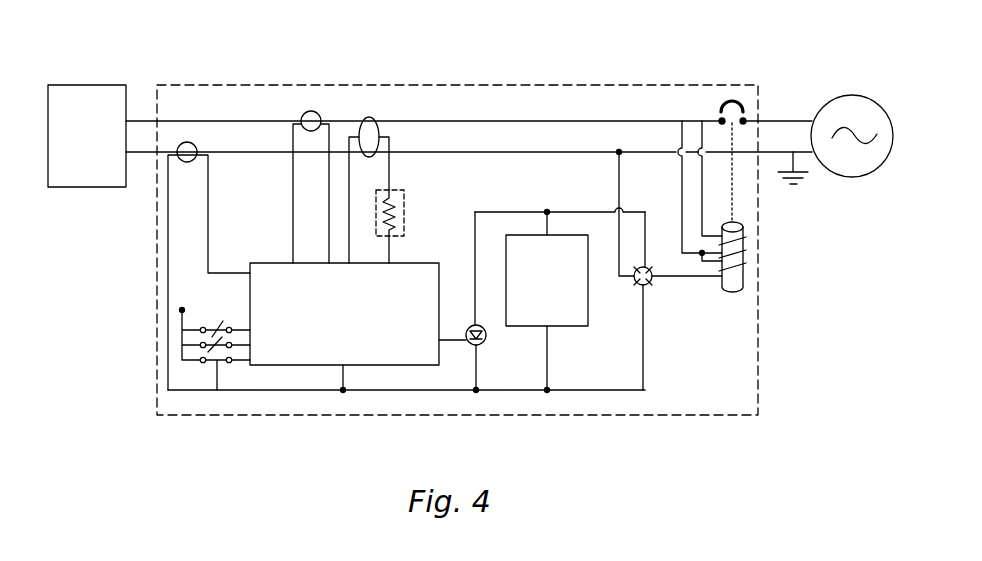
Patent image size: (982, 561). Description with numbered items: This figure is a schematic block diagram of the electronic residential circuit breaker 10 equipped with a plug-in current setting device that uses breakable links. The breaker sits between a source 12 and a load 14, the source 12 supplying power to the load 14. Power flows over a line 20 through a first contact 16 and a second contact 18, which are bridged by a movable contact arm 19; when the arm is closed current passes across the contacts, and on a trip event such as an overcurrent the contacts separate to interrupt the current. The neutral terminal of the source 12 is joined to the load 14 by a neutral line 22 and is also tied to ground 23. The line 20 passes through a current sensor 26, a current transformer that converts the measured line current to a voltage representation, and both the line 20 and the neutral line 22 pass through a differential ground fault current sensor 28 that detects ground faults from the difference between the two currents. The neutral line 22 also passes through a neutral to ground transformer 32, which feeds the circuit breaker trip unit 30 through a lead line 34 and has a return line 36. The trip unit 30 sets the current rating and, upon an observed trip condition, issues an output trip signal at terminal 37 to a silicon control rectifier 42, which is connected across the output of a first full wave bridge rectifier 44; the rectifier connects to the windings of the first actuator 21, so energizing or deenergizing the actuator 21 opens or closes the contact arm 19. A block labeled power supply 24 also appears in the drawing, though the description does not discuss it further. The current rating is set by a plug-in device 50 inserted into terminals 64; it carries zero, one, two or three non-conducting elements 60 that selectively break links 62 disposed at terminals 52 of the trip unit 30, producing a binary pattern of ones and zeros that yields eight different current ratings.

The electronic residential circuit breaker 10 is at (435, 84).
The source 12 is at (867, 173).
The load 14 is at (76, 112).
The first contact 16 is at (745, 117).
The second contact 18 is at (720, 117).
The movable contact arm 19 is at (732, 99).
The line 20 is at (495, 119).
The first actuator 21 is at (743, 256).
The neutral line 22 is at (436, 153).
The ground 23 is at (793, 186).
The power supply 24 is at (582, 328).
The current sensor 26 is at (311, 111).
The differential ground fault current sensor 28 is at (369, 117).
The circuit breaker trip unit 30 is at (410, 262).
The neutral to ground transformer 32 is at (187, 142).
The lead line 34 is at (207, 230).
The return line 36 is at (168, 376).
The terminal 37 is at (439, 340).
The silicon control rectifier 42 is at (486, 337).
The first full wave bridge rectifier 44 is at (659, 292).
The plug-in device 50 is at (206, 367).
The terminals 52 is at (230, 326).
The non-conducting elements 60 is at (219, 325).
The links 62 is at (219, 363).
The terminals 64 is at (204, 362).